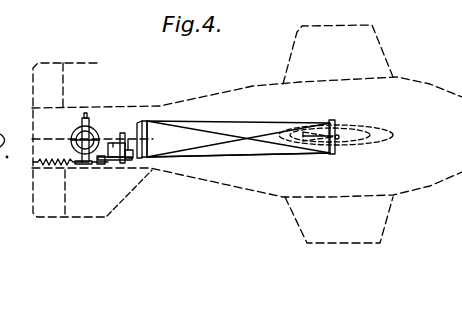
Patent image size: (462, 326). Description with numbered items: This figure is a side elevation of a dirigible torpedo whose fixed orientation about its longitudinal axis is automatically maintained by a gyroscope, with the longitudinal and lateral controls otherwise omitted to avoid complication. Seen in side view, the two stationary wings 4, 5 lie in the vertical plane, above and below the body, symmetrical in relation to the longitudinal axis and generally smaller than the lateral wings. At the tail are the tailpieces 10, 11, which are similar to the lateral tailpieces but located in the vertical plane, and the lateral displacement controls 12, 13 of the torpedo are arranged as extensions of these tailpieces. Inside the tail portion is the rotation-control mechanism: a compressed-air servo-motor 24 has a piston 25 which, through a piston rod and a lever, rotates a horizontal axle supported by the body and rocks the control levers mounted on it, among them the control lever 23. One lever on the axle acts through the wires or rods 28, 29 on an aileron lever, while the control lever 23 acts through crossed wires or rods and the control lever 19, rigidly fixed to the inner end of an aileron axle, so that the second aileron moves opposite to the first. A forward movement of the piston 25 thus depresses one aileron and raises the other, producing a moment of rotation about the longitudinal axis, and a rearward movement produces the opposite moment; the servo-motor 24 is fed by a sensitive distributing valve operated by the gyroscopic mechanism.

The stationary wing 4 is at (387, 37).
The stationary wing 5 is at (394, 222).
The tailpiece 10 is at (82, 106).
The tailpiece 11 is at (128, 200).
The lateral displacement control 12 is at (70, 132).
The lateral displacement control 13 is at (54, 207).
The control lever 19 is at (349, 106).
The control lever 23 is at (164, 116).
The compressed-air servo-motor 24 is at (132, 112).
The piston 25 is at (160, 106).
The wire or rod 28 is at (238, 115).
The wire or rod 29 is at (238, 182).